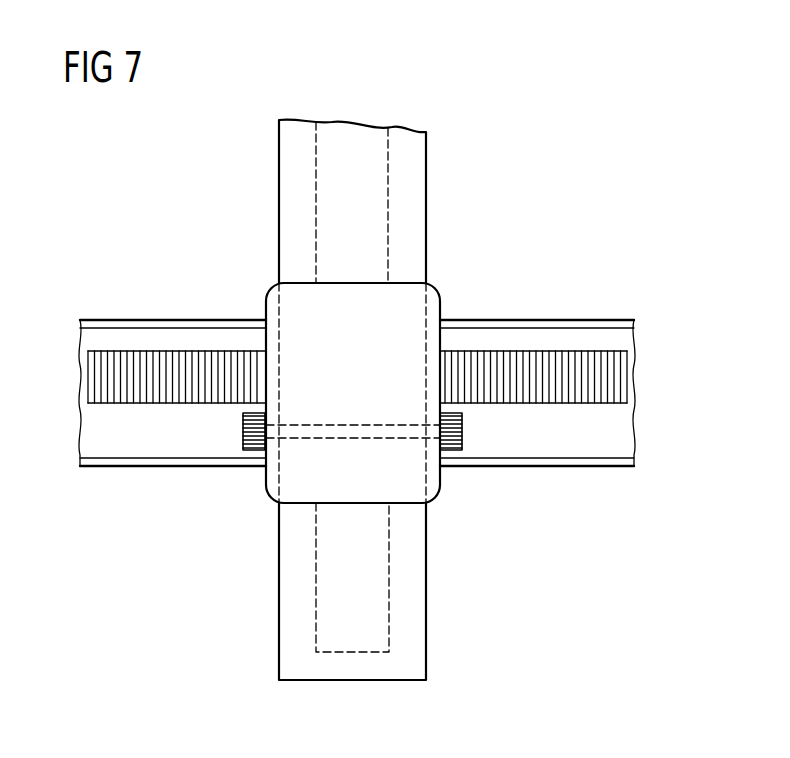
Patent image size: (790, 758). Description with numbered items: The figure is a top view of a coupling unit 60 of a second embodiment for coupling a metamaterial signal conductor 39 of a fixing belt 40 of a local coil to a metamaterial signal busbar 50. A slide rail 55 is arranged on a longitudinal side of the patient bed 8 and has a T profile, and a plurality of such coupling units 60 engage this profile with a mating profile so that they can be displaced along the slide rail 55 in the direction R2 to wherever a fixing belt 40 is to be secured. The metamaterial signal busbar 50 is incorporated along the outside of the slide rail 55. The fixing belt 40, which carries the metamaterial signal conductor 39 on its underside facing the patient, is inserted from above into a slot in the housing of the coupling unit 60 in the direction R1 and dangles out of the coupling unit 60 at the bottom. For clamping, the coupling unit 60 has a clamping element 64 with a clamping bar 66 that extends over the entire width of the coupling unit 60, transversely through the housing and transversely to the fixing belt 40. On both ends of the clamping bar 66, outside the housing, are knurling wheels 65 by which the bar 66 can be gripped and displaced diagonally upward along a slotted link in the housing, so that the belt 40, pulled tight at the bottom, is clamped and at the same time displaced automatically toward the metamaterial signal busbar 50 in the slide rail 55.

The patient bed 8 is at (607, 313).
The metamaterial signal conductor 39 is at (340, 192).
The fixing belt 40 is at (426, 165).
The metamaterial signal busbar 50 is at (566, 357).
The slide rail 55 is at (622, 441).
The coupling unit 60 is at (270, 480).
The clamping element 64 is at (336, 426).
The knurling wheels 65 is at (243, 432).
The clamping bar 66 is at (384, 433).
The direction of belt movement R1 is at (353, 58).
The displacement direction along slide rail R2 is at (710, 393).